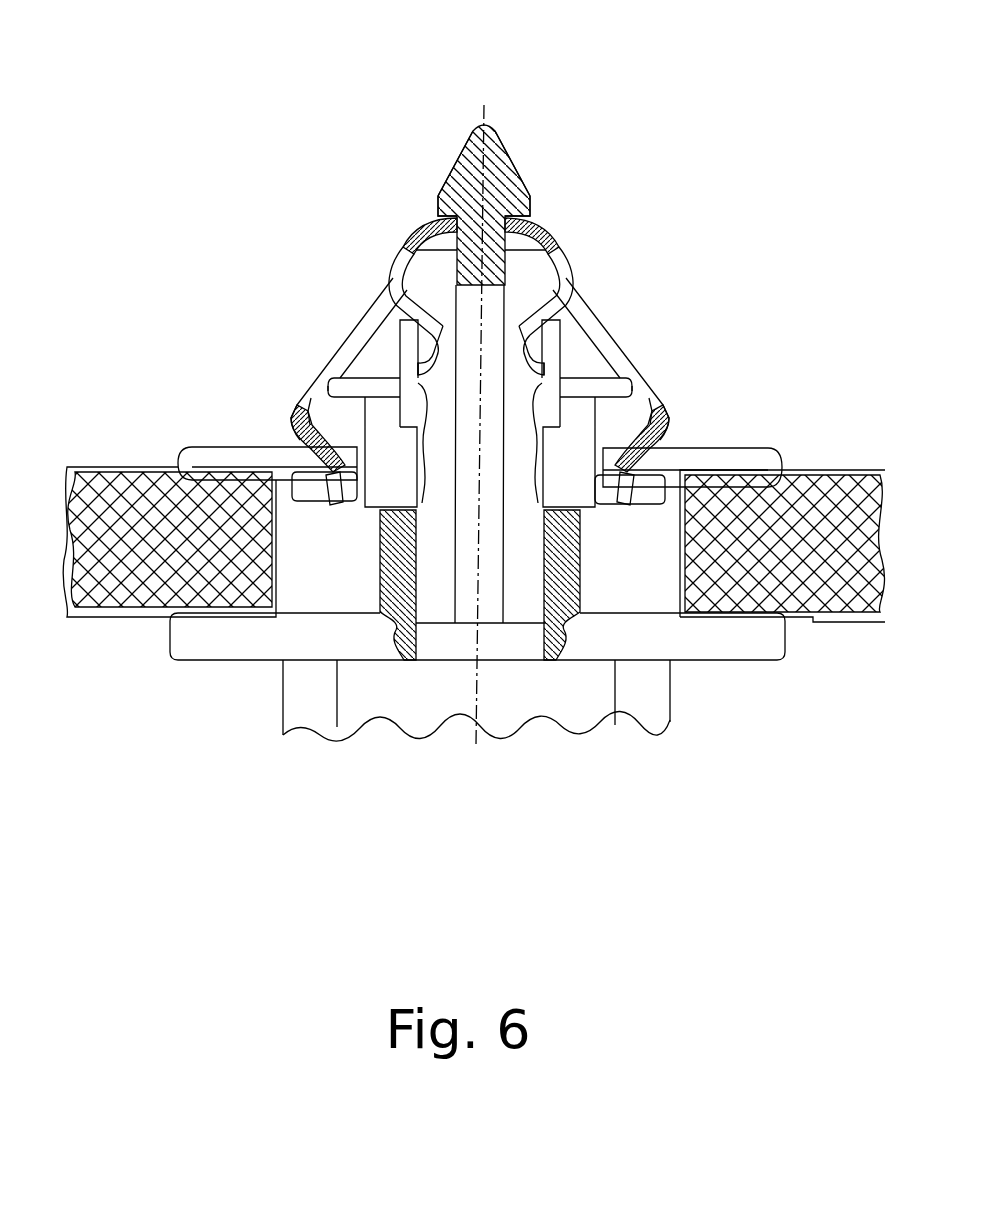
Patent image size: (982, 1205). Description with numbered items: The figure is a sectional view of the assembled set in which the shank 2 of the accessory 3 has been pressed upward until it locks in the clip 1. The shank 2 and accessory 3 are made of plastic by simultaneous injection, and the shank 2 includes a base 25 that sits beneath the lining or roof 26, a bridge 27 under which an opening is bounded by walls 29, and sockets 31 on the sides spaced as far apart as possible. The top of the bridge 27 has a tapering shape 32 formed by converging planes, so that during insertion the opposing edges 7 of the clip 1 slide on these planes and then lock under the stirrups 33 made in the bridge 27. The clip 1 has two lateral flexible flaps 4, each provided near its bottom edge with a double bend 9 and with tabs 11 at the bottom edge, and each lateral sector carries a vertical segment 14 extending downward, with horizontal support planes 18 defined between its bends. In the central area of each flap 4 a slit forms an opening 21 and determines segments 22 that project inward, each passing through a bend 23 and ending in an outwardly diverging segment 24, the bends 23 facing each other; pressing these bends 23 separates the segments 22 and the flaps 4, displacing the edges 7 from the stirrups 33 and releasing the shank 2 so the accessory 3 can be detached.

The clip 1 is at (568, 232).
The shank 2 is at (483, 103).
The accessory 3 is at (428, 722).
The lateral flexible flap 4 is at (312, 395).
The opposing edge 7 is at (442, 218).
The double bend 9 is at (300, 426).
The tab 11 is at (327, 500).
The vertical segment 14 is at (406, 468).
The horizontal support plane 18 is at (386, 380).
The opening 21 is at (380, 297).
The segment 22 is at (405, 282).
The bend 23 is at (432, 337).
The outwardly diverging segment 24 is at (420, 362).
The base 25 is at (280, 640).
The lining or roof 26 is at (815, 623).
The bridge 27 is at (481, 170).
The wall 29 is at (403, 590).
The socket 31 is at (345, 402).
The tapering shape 32 is at (462, 200).
The stirrup 33 is at (437, 197).